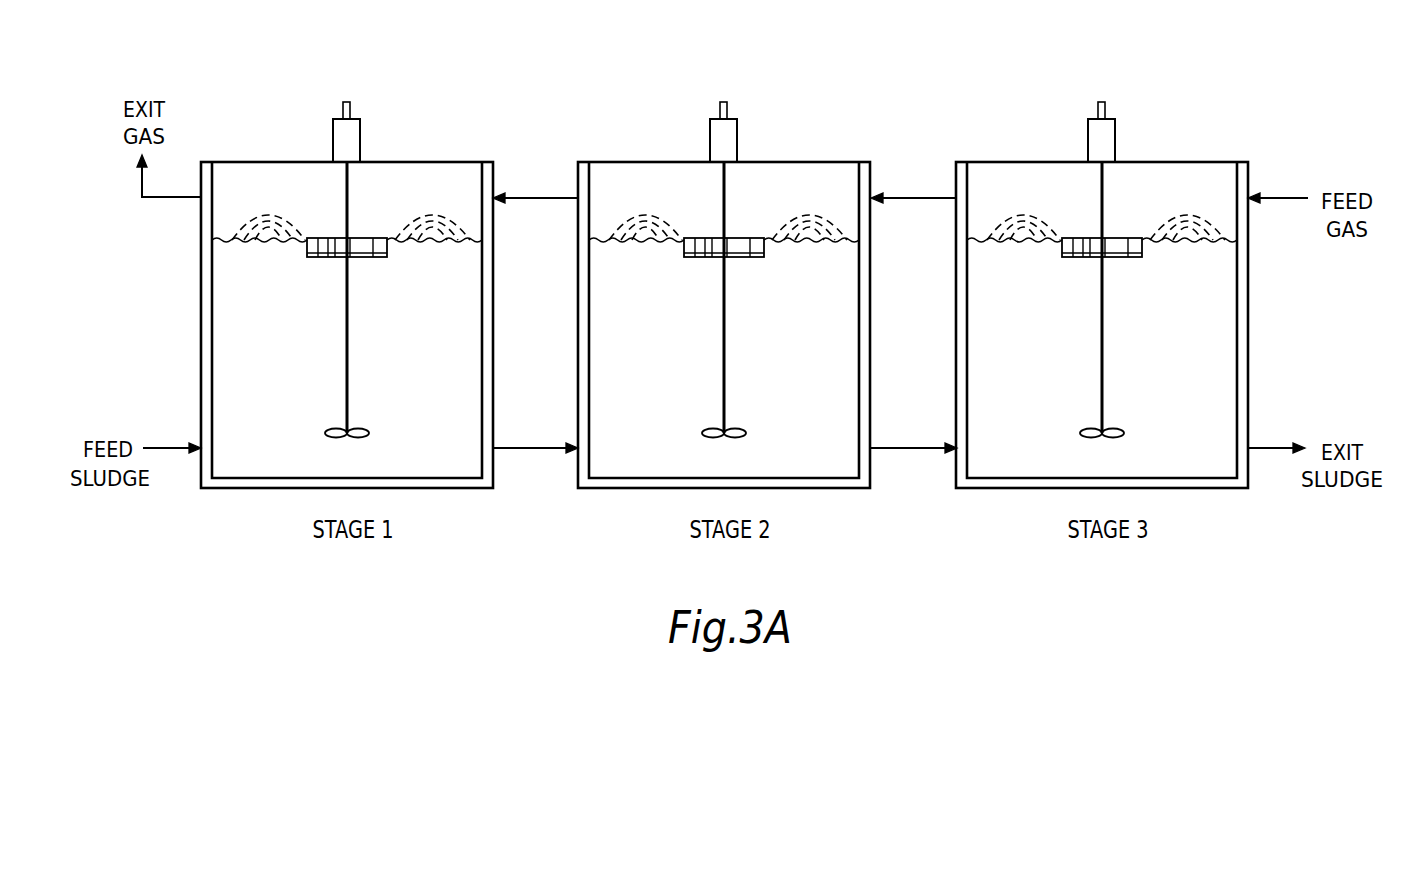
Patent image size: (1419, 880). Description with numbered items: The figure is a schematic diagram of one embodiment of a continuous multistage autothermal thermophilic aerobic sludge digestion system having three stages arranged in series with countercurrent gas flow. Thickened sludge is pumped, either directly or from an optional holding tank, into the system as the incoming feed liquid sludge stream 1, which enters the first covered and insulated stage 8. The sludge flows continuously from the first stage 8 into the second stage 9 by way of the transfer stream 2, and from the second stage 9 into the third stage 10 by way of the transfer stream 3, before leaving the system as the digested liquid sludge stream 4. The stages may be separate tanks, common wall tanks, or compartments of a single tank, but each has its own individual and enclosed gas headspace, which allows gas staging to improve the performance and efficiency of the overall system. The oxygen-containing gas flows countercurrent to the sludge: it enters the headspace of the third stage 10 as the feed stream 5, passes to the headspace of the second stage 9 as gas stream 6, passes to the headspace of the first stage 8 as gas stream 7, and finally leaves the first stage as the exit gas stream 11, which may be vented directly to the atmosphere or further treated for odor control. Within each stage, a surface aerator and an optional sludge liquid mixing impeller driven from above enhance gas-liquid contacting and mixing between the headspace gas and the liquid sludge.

The feed liquid sludge stream 1 is at (172, 435).
The sludge transfer stream from stage 1 to stage 2 is at (535, 435).
The sludge transfer stream from stage 2 to stage 3 is at (914, 435).
The digested liquid sludge stream 4 is at (1276, 435).
The feed stream 5 is at (1278, 185).
The gas transfer stream from stage 3 to stage 2 6 is at (914, 184).
The gas transfer stream from stage 2 to stage 1 7 is at (535, 184).
The first stage 8 is at (347, 325).
The second stage 9 is at (724, 325).
The third stage 10 is at (1102, 325).
The exit gas stream 11 is at (169, 176).